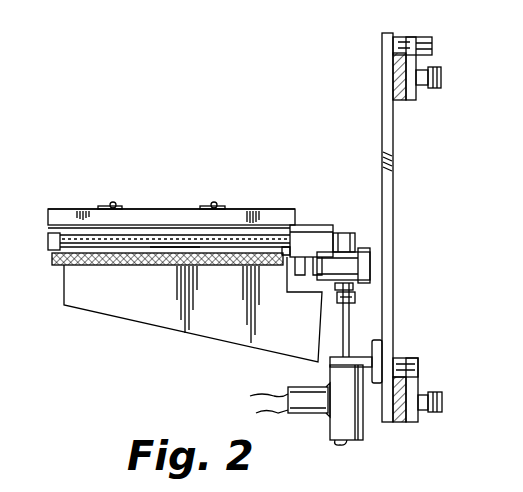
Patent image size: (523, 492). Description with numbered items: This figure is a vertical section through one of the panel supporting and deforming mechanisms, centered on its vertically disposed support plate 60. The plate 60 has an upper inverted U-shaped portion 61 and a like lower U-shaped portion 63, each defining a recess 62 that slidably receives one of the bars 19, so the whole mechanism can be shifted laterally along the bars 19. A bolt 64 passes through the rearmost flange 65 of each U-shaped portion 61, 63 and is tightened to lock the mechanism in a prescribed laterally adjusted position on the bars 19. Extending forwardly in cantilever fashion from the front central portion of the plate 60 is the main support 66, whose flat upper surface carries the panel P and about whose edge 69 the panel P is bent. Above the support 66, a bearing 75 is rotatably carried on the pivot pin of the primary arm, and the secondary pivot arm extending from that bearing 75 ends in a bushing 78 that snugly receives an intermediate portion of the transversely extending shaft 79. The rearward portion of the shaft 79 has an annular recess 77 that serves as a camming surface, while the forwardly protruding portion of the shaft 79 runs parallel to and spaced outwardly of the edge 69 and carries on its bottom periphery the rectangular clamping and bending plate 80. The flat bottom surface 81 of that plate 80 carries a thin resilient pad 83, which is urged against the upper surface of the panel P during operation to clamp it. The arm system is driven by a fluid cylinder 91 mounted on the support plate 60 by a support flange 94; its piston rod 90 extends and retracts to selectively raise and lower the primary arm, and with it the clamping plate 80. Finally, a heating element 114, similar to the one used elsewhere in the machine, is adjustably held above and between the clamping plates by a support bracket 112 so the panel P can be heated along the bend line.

The bar 19 is at (400, 100).
The support plate 60 is at (388, 193).
The upper inverted U-shaped portion 61 is at (393, 39).
The recess 62 is at (412, 100).
The lower U-shaped portion 63 is at (401, 365).
The bolt 64 is at (443, 78).
The rearmost flange 65 is at (422, 88).
The main support 66 is at (192, 333).
The edge 69 is at (53, 262).
The bearing 75 is at (350, 255).
The annular recess 77 is at (345, 232).
The bushing 78 is at (314, 240).
The shaft 79 is at (198, 240).
The clamping and bending plate 80 is at (90, 258).
The bottom surface 81 is at (137, 205).
The resilient pad 83 is at (237, 263).
The piston rod 90 is at (345, 350).
The fluid cylinder 91 is at (333, 425).
The support flange 94 is at (333, 361).
The support bracket 112 is at (212, 205).
The heating element 114 is at (238, 208).
The panel P is at (168, 268).